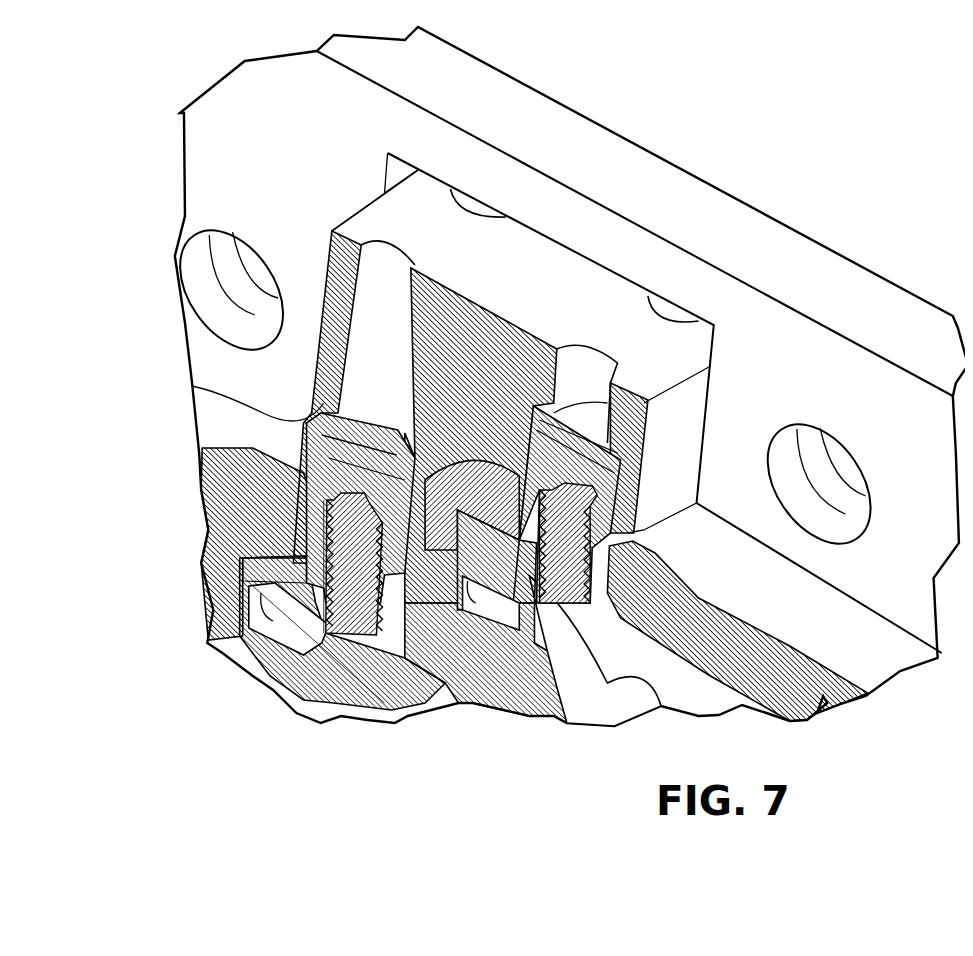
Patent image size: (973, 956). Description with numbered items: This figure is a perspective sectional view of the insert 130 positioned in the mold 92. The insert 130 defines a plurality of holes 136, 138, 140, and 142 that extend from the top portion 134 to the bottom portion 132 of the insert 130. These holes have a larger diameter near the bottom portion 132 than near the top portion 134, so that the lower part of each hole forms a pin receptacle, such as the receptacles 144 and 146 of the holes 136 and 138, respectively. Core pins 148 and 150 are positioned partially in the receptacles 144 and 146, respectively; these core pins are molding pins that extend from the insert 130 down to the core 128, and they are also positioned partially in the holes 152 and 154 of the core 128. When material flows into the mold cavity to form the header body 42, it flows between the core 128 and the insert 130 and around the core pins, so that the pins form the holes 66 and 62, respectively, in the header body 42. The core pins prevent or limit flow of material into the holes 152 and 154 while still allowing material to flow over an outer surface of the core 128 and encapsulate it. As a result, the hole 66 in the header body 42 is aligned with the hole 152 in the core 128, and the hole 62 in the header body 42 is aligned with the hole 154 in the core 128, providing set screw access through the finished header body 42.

The mold 92 is at (200, 152).
The insert 130 is at (383, 178).
The top portion 134 is at (513, 258).
The hole 136 is at (357, 238).
The hole 138 is at (566, 340).
The hole 140 is at (445, 196).
The hole 142 is at (640, 308).
The receptacle 144 is at (323, 400).
The receptacle 146 is at (520, 405).
The core pin 148 is at (363, 473).
The core pin 150 is at (500, 455).
The hole 152 is at (323, 583).
The hole 154 is at (527, 540).
The bottom portion 132 is at (307, 492).
The hole 66 is at (318, 527).
The hole 62 is at (646, 543).
The header body 42 is at (207, 640).
The core 128 is at (370, 730).